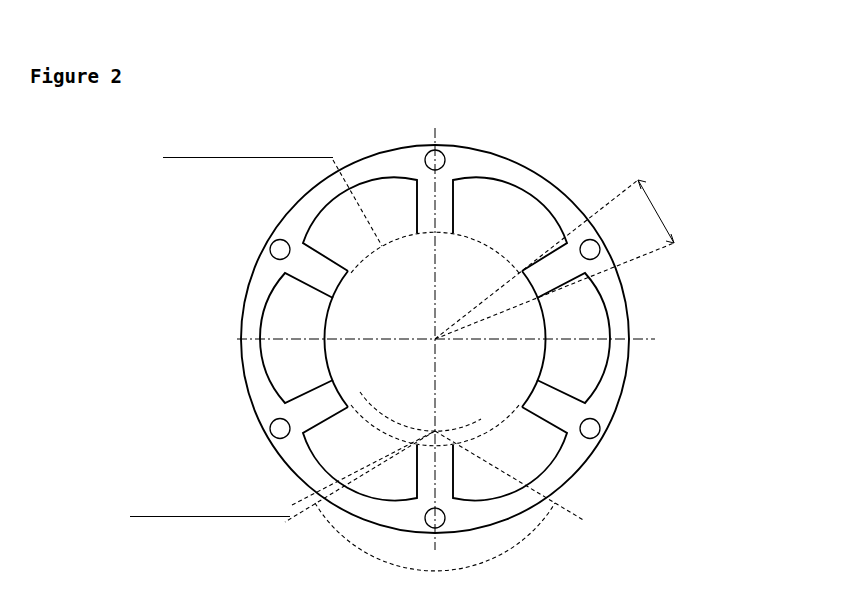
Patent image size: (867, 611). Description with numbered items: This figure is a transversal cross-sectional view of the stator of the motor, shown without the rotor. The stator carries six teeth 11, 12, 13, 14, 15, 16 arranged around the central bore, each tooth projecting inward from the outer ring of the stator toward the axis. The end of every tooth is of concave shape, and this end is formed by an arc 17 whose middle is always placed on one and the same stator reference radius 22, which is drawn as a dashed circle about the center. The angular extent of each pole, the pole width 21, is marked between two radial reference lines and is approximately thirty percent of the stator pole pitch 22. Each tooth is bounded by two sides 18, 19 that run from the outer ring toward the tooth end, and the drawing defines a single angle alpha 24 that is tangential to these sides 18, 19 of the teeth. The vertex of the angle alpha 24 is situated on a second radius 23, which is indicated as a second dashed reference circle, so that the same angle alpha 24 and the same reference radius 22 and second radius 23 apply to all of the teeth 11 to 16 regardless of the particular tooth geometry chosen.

The tooth 11 is at (543, 278).
The tooth 12 is at (558, 415).
The tooth 13 is at (538, 502).
The tooth 14 is at (323, 400).
The tooth 15 is at (317, 292).
The tooth 16 is at (443, 212).
The arc forming the tooth end 17 is at (535, 395).
The side of the tooth 18 is at (533, 365).
The side of the tooth 19 is at (537, 440).
The pole width 21 is at (665, 227).
The stator pole pitch / radius R1 22 is at (370, 268).
The radius R2 23 is at (446, 339).
The angle alpha 24 is at (453, 573).